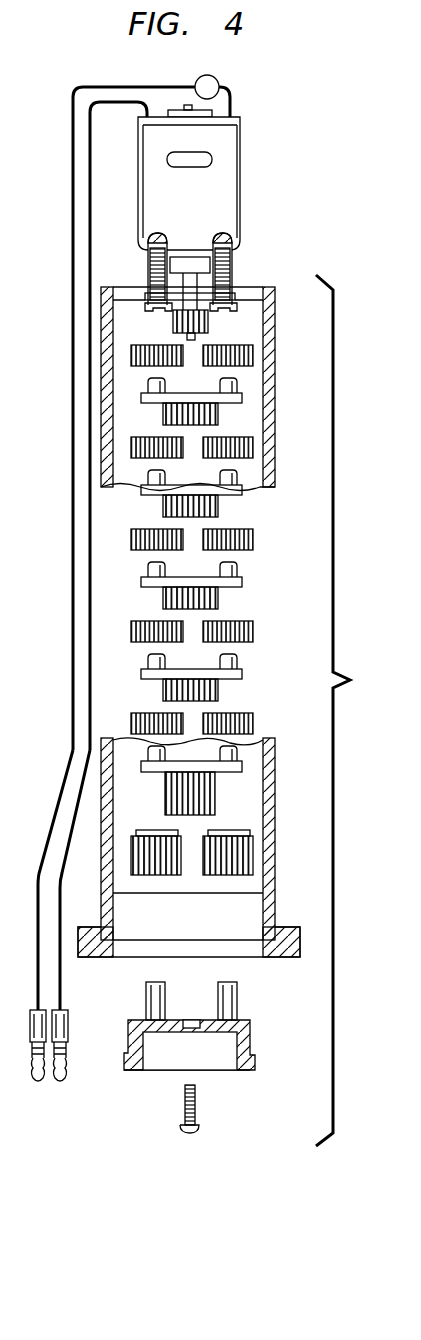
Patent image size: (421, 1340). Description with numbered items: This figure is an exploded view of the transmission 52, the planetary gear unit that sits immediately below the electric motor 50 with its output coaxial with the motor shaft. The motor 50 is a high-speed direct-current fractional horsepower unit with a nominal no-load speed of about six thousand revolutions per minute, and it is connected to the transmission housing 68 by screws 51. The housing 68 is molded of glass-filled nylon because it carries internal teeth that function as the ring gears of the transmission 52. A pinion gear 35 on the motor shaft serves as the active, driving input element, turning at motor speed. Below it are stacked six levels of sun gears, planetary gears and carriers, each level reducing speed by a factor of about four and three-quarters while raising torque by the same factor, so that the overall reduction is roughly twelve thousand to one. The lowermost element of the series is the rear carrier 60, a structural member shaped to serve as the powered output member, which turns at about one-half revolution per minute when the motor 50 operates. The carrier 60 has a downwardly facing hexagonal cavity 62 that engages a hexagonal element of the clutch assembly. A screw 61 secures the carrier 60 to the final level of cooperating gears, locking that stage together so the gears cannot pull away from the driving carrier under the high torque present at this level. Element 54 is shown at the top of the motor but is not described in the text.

The pinion gear 35 is at (175, 318).
The electric motor 50 is at (212, 177).
The screws 51 is at (150, 272).
The transmission 52 is at (348, 710).
The motor lead connector 54 is at (212, 90).
The rear carrier 60 is at (262, 1040).
The screw 61 is at (184, 1112).
The cavity 62 is at (213, 1044).
The transmission housing 68 is at (272, 342).